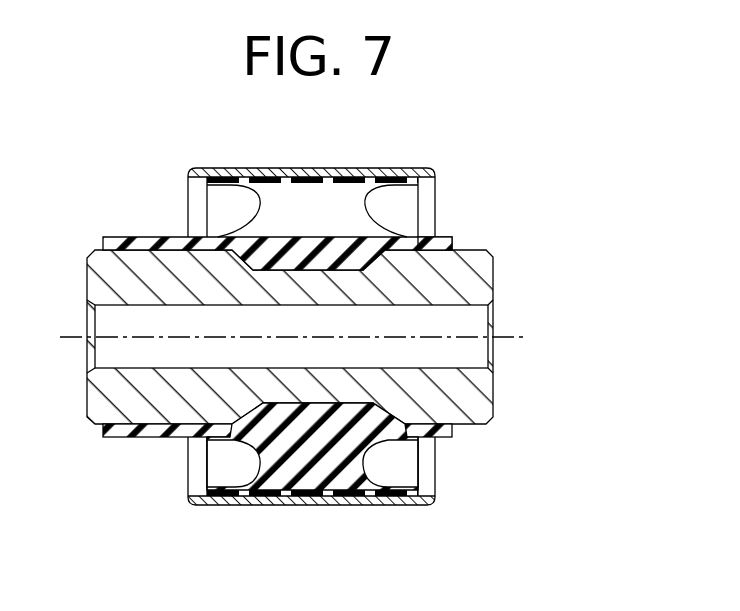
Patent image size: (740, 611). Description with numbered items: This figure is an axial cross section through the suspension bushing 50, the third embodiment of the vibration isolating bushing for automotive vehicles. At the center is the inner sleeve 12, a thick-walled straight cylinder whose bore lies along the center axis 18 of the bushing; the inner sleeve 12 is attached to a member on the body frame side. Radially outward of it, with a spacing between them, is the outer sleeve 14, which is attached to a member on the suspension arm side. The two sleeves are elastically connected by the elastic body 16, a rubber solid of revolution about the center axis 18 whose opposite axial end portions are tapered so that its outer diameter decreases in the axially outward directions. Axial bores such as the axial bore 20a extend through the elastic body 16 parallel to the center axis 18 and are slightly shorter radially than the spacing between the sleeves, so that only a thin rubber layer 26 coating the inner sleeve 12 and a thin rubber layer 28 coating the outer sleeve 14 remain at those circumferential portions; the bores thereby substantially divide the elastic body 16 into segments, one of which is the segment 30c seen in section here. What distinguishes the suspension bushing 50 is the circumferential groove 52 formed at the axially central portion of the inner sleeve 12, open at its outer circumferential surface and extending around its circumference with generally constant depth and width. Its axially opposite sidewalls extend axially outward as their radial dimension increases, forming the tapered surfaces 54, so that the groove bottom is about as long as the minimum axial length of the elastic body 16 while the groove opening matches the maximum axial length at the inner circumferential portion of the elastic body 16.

The suspension bushing 50 is at (462, 142).
The inner sleeve 12 is at (142, 257).
The outer sleeve 14 is at (345, 500).
The elastic body 16 is at (278, 499).
The center axis 18 is at (507, 335).
The axial bore 20a is at (343, 180).
The thin rubber layer 26 is at (420, 240).
The thin rubber layer 28 is at (270, 181).
The segment 30c is at (305, 462).
The circumferential groove 52 is at (297, 263).
The tapered surface 54 is at (235, 238).